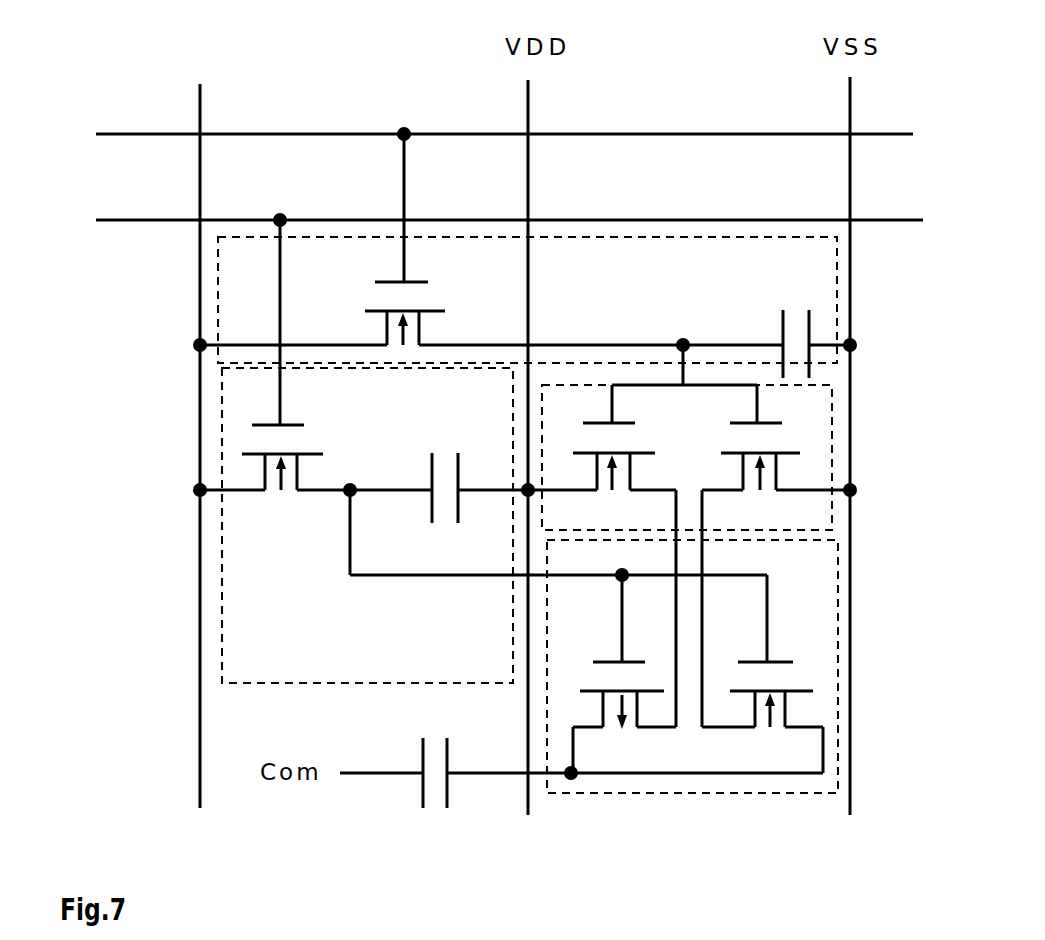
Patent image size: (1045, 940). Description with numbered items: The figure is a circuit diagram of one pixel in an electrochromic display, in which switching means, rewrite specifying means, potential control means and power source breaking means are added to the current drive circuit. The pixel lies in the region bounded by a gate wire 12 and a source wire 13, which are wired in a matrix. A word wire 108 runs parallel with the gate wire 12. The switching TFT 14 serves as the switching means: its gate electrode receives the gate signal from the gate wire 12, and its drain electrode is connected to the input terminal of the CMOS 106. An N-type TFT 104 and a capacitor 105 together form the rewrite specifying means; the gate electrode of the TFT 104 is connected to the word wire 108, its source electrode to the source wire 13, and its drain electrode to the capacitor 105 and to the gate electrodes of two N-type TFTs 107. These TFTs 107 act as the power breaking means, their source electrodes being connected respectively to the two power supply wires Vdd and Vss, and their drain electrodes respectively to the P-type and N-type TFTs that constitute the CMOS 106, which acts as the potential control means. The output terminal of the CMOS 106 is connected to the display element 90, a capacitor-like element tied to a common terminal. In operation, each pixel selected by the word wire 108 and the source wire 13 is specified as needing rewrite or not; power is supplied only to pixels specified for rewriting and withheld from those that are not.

The source wire 13 is at (191, 422).
The word wire 108 is at (471, 115).
The gate wire 12 is at (477, 238).
The N-type TFT 104 is at (527, 248).
The capacitor 105 is at (776, 325).
The N-type TFTs 107 is at (687, 437).
The switching TFT 14 is at (367, 451).
The CMOS 106 is at (783, 627).
The display element 90 is at (429, 789).